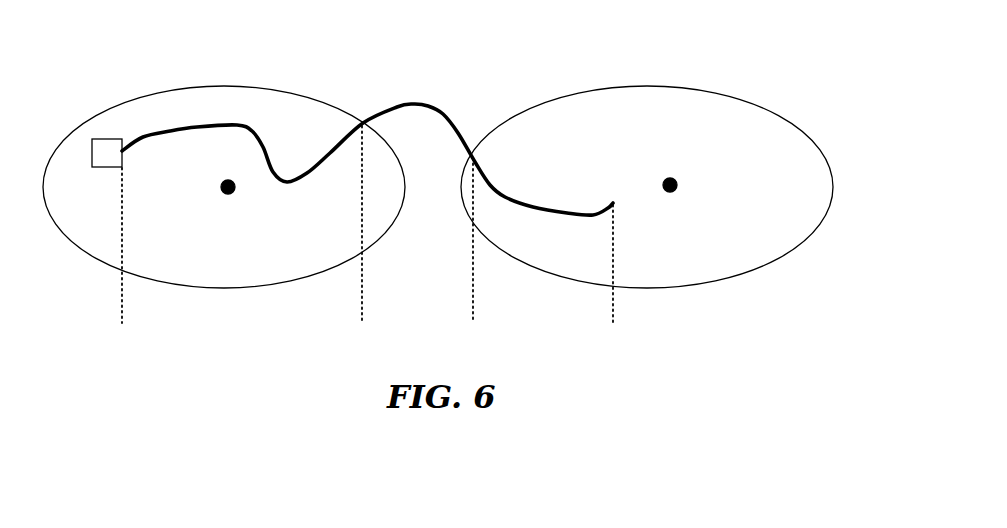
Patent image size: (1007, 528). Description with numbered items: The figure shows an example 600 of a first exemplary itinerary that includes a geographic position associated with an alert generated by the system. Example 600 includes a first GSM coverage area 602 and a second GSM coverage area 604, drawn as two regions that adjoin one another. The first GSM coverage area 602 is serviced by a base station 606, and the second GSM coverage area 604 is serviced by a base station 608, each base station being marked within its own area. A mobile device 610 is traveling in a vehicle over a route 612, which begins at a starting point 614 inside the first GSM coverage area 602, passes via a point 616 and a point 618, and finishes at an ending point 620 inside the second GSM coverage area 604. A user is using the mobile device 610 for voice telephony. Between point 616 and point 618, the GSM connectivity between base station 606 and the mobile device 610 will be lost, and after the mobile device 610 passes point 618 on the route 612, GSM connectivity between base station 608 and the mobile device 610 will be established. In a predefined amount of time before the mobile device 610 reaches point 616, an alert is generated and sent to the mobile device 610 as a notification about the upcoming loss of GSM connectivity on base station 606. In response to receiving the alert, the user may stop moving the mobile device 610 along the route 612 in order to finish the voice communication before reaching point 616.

The example 600 is at (460, 54).
The first GSM coverage area 602 is at (320, 102).
The second GSM coverage area 604 is at (747, 103).
The base station 606 is at (222, 192).
The base station 608 is at (677, 178).
The mobile device 610 is at (110, 139).
The route 612 is at (264, 147).
The starting point 614 is at (123, 260).
The point 616 is at (363, 239).
The point 618 is at (473, 255).
The ending point 620 is at (615, 279).